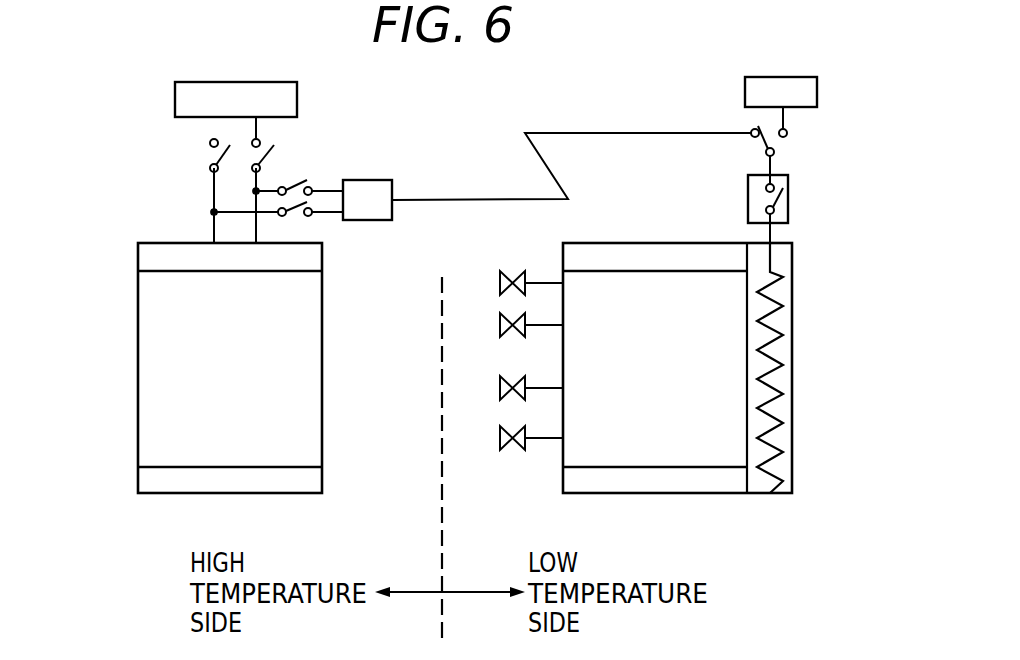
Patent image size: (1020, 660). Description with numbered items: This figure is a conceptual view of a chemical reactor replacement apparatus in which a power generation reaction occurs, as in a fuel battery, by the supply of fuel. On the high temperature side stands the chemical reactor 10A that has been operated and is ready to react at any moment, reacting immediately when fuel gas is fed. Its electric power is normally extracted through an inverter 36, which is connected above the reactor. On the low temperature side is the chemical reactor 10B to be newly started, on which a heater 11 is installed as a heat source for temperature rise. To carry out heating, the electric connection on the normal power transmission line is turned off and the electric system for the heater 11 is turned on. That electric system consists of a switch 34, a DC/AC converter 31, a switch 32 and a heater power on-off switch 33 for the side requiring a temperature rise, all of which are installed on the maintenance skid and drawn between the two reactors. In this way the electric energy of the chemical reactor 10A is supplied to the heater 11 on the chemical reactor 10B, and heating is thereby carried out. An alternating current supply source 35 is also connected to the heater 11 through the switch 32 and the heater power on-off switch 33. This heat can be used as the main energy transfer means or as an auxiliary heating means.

The chemical reactor 10A is at (167, 485).
The chemical reactor 10B is at (690, 480).
The heater 11 is at (780, 490).
The DC/AC converter 31 is at (373, 180).
The switch 32 is at (757, 143).
The heater power on-off switch 33 is at (788, 197).
The switch 34 is at (290, 180).
The alternating current supply source 35 is at (745, 88).
The inverter 36 is at (175, 100).